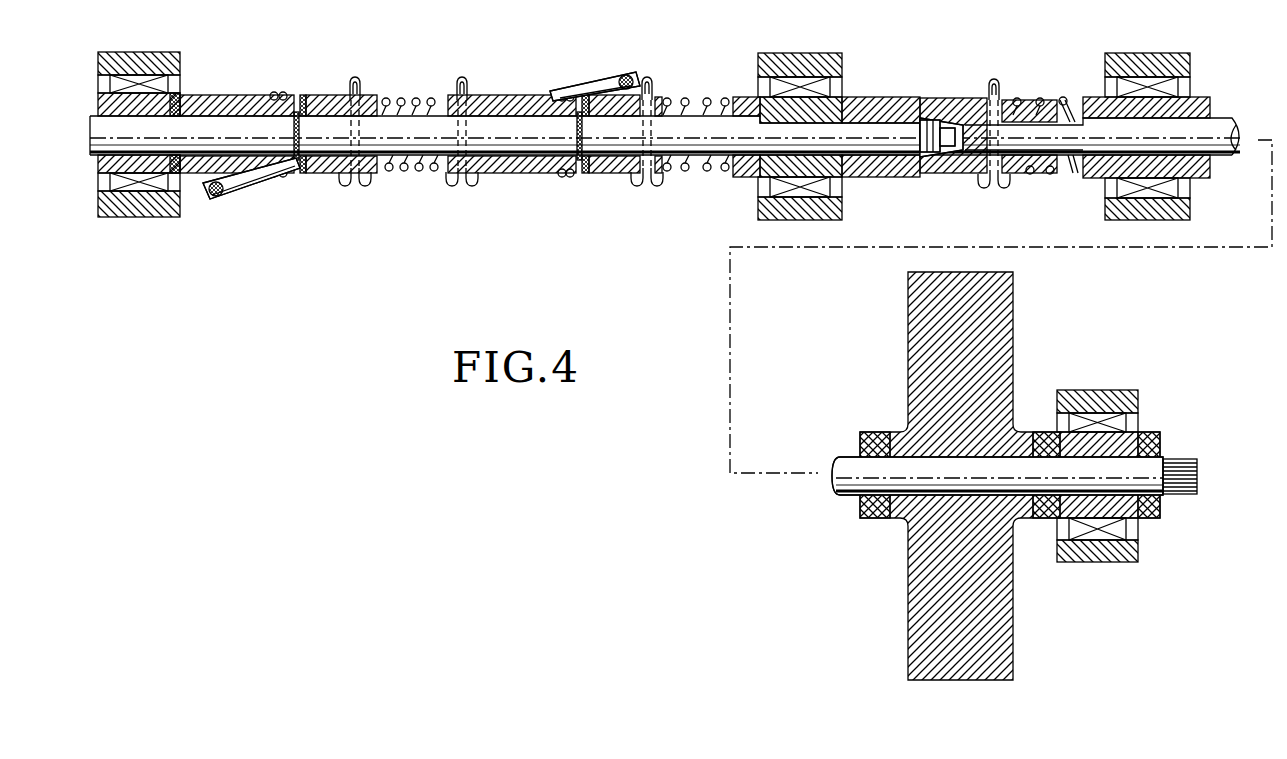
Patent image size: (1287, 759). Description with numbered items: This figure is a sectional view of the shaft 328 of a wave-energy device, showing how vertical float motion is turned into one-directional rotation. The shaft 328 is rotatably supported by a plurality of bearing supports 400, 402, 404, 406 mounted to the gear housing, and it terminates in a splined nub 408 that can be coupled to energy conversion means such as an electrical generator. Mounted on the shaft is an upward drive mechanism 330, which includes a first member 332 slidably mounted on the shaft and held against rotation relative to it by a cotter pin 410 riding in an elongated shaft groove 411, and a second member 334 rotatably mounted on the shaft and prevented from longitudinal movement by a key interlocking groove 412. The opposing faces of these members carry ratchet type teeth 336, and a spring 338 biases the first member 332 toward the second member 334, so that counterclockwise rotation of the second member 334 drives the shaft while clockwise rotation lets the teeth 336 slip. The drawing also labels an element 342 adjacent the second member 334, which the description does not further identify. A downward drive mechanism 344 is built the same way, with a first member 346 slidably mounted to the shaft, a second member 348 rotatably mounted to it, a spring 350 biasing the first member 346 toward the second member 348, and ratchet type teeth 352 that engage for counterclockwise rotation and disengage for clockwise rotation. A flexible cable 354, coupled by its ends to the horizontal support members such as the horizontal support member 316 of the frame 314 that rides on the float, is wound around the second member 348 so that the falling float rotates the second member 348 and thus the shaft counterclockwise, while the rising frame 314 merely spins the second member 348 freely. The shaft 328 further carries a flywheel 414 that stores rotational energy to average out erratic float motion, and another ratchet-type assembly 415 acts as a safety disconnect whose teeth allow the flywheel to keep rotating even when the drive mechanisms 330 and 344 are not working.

The frame 314 is at (610, 73).
The horizontal support member 316 is at (228, 200).
The shaft 328 is at (1232, 115).
The upward drive mechanism 330 is at (598, 231).
The first member 332 is at (620, 176).
The second member 334 is at (500, 177).
The ratchet type teeth 336 is at (584, 176).
The spring 338 is at (702, 176).
The balls 342 is at (560, 178).
The downward drive mechanism 344 is at (296, 205).
The first member 346 is at (338, 92).
The second member 348 is at (240, 93).
The spring 350 is at (409, 180).
The ratchet type teeth 352 is at (305, 93).
The flexible cable 354 is at (277, 91).
The bearing support 400 is at (170, 52).
The bearing support 402 is at (842, 55).
The bearing support 404 is at (1182, 53).
The bearing support 406 is at (1105, 563).
The splined nub 408 is at (1200, 476).
The cotter pin 410 is at (360, 85).
The elongated shaft groove 411 is at (680, 112).
The key interlocking groove 412 is at (290, 135).
The flywheel 414 is at (1014, 633).
The ratchet-type assembly 415 is at (938, 90).